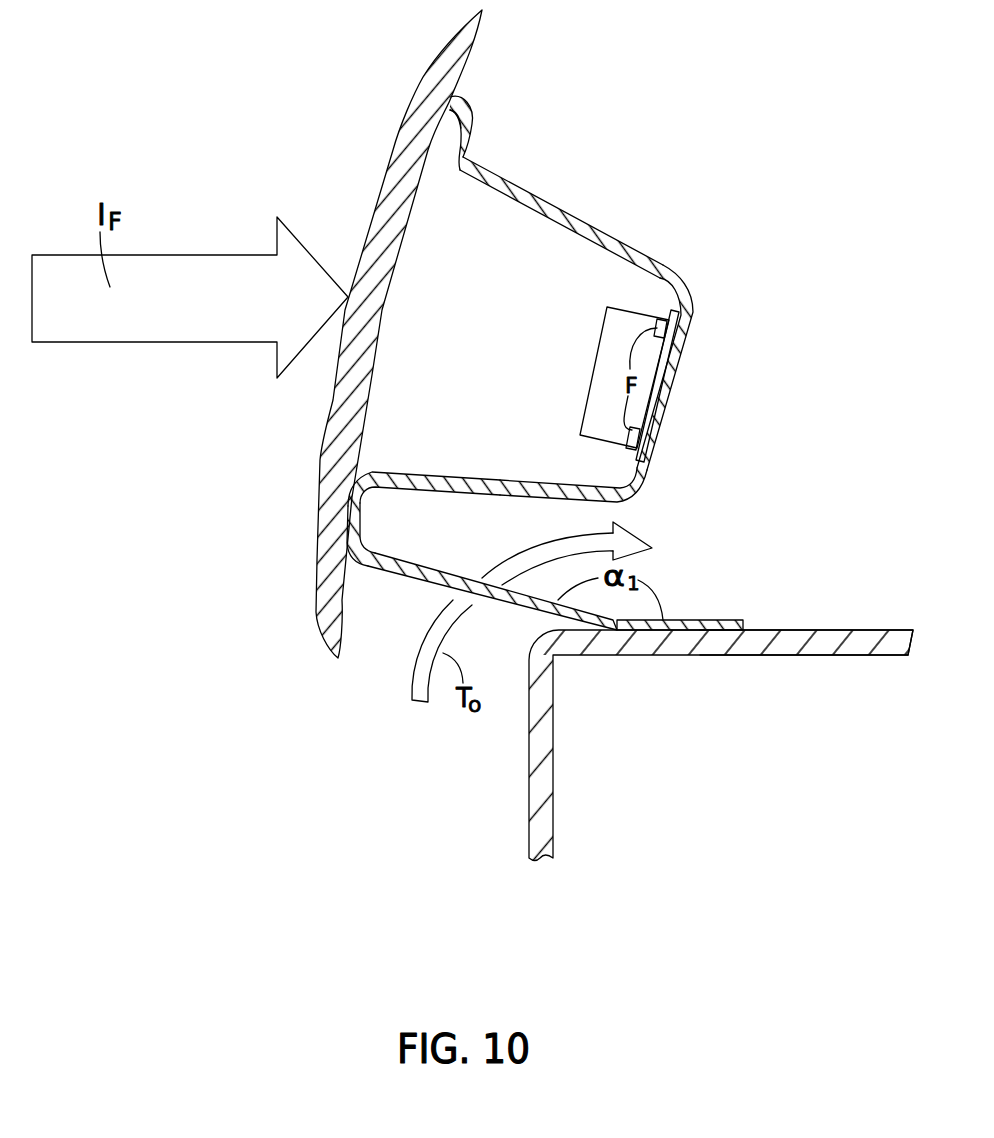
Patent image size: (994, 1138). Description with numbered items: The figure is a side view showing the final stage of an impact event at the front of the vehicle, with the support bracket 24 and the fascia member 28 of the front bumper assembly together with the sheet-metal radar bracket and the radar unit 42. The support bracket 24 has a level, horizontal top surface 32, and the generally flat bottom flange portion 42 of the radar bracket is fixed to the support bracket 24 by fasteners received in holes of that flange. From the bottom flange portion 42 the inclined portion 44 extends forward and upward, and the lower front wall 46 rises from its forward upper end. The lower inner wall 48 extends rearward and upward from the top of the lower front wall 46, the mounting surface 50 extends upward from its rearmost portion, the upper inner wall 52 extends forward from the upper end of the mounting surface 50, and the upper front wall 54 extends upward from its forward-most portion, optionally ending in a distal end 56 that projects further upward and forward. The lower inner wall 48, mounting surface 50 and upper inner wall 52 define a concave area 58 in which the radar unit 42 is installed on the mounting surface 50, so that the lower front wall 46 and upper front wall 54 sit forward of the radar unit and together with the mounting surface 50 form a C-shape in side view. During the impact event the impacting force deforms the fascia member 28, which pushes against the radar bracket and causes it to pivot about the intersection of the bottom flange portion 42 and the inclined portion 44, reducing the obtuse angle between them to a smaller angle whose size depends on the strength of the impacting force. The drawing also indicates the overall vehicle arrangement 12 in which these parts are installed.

The attachment system 12 is at (718, 120).
The support bracket 24 is at (797, 643).
The fascia member 28 is at (404, 165).
The top surface 32 is at (858, 622).
The bottom flange portion 42 is at (614, 342).
The inclined portion 44 is at (440, 572).
The lower front wall 46 is at (356, 512).
The lower inner wall 48 is at (430, 472).
The mounting surface 50 is at (674, 396).
The upper inner wall 52 is at (552, 222).
The upper front wall 54 is at (457, 141).
The distal end 56 is at (458, 100).
The concave area 58 is at (508, 481).